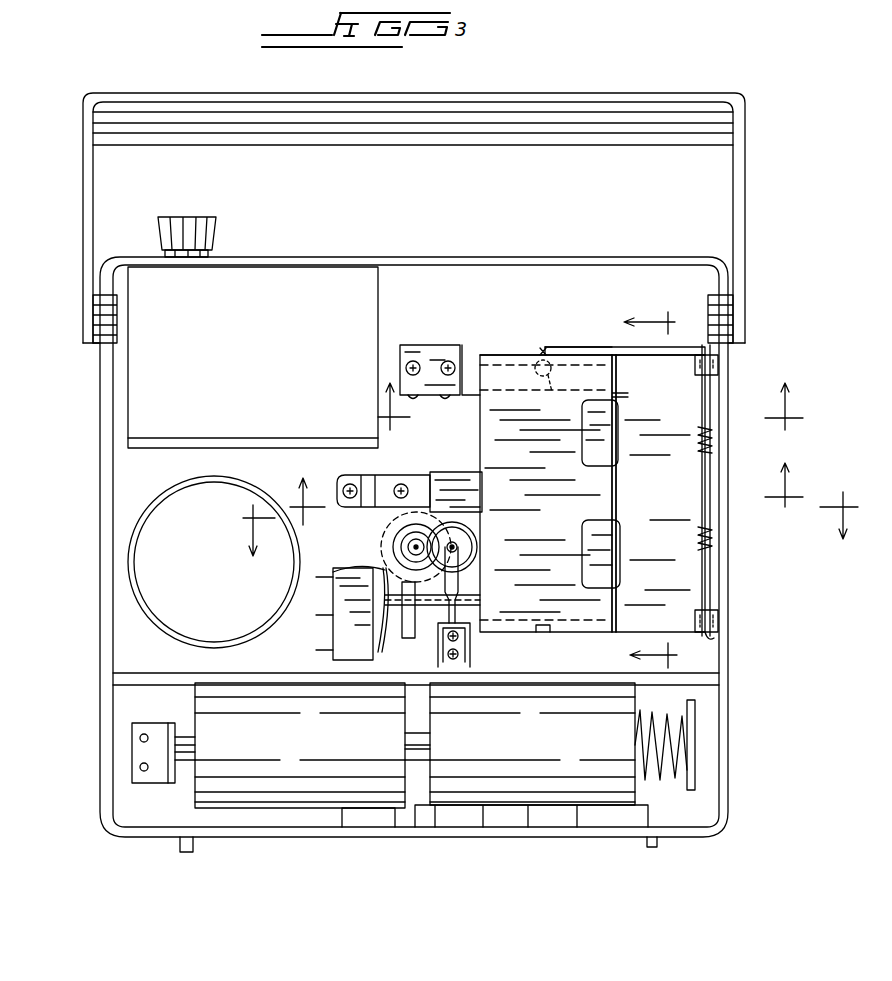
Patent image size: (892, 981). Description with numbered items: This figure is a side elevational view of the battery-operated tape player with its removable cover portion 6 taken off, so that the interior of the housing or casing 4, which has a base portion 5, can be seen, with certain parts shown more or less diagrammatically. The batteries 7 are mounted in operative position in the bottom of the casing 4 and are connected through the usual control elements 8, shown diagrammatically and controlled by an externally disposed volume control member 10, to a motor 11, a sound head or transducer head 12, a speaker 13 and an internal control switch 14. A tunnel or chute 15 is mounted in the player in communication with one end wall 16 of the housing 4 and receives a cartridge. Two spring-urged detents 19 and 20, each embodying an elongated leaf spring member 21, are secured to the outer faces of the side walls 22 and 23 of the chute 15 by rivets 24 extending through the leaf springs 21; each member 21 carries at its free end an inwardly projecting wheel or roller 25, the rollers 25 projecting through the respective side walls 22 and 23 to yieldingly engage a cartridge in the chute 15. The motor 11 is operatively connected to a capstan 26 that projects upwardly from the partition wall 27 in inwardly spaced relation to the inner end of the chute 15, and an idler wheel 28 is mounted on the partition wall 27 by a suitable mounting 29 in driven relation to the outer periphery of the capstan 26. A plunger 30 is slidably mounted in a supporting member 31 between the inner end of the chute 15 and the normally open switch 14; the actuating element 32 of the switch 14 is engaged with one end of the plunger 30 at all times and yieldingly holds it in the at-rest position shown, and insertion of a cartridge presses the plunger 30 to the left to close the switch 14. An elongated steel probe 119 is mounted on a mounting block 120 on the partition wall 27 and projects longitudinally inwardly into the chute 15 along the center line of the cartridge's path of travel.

The housing or casing 4 is at (530, 252).
The base portion 5 is at (655, 258).
The removable cover portion 6 is at (547, 517).
The batteries 7 is at (286, 756).
The control elements 8 is at (248, 362).
The volume control member 10 is at (200, 240).
The motor 11 is at (392, 528).
The sound head or transducer head 12 is at (467, 480).
The speaker 13 is at (224, 574).
The internal control switch 14 is at (340, 632).
The tunnel or chute 15 is at (512, 355).
The end wall 16 is at (733, 800).
The spring-urged detent 19 is at (585, 348).
The spring-urged detent 20 is at (538, 634).
The elongated leaf spring member 21 is at (620, 352).
The side wall 22 is at (546, 356).
The side wall 23 is at (495, 633).
The rivets 24 is at (680, 336).
The wheel or roller 25 is at (546, 622).
The capstan 26 is at (410, 548).
The partition wall 27 is at (538, 294).
The idler wheel 28 is at (474, 533).
The mounting 29 is at (480, 597).
The plunger 30 is at (428, 610).
The supporting member 31 is at (404, 612).
The actuating element 32 is at (358, 565).
The elongated probe 119 is at (468, 357).
The mounting block 120 is at (432, 350).